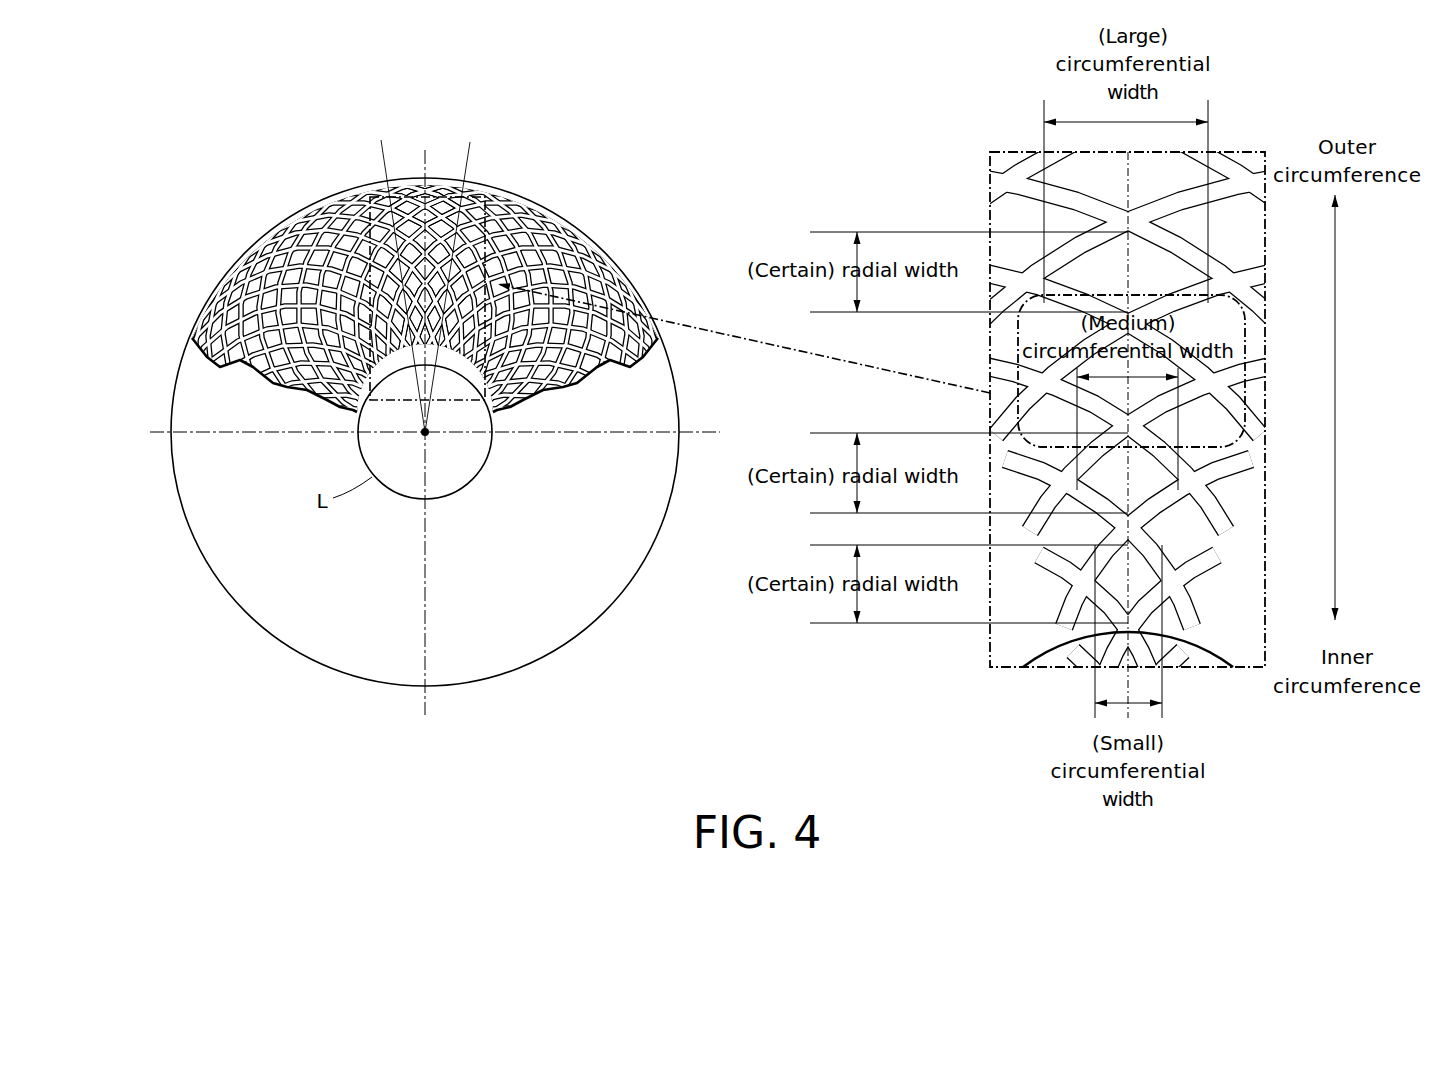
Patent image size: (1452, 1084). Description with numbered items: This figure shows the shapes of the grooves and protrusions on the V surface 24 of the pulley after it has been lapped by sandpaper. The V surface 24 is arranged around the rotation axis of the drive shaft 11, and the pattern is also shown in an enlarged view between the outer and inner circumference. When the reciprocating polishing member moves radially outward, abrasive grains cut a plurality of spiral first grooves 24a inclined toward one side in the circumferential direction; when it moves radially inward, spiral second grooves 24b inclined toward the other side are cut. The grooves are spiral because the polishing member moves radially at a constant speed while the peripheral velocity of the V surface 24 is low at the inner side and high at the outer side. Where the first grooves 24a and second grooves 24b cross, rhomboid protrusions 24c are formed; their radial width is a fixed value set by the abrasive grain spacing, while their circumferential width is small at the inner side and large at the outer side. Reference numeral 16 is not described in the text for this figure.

The V surface 24 is at (743, 394).
The first groove 24a is at (1200, 563).
The second groove 24b is at (1057, 563).
The rhomboid protrusion 24c is at (1144, 596).
The apex portion 16 is at (455, 165).
The drive shaft 11 is at (473, 480).